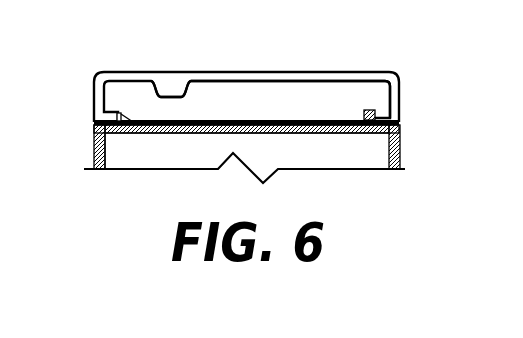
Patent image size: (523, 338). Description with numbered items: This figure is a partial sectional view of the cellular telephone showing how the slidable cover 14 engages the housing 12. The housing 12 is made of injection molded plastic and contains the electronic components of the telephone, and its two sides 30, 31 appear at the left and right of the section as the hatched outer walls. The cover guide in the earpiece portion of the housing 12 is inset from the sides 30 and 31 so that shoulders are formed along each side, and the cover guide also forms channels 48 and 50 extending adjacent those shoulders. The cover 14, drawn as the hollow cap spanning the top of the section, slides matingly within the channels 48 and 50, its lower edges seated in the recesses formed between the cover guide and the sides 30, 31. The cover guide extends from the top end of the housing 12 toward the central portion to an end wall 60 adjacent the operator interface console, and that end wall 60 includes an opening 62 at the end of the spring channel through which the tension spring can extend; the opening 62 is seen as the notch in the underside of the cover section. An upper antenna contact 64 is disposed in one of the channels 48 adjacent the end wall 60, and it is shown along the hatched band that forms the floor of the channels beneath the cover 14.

The slidable cover 14 is at (402, 90).
The housing 12 is at (92, 140).
The side of the housing 31 is at (92, 155).
The side of the housing 30 is at (402, 152).
The opening 62 is at (183, 93).
The end wall 60 is at (293, 114).
The channel 48 is at (365, 110).
The channel 50 is at (153, 134).
The upper antenna contact 64 is at (345, 130).